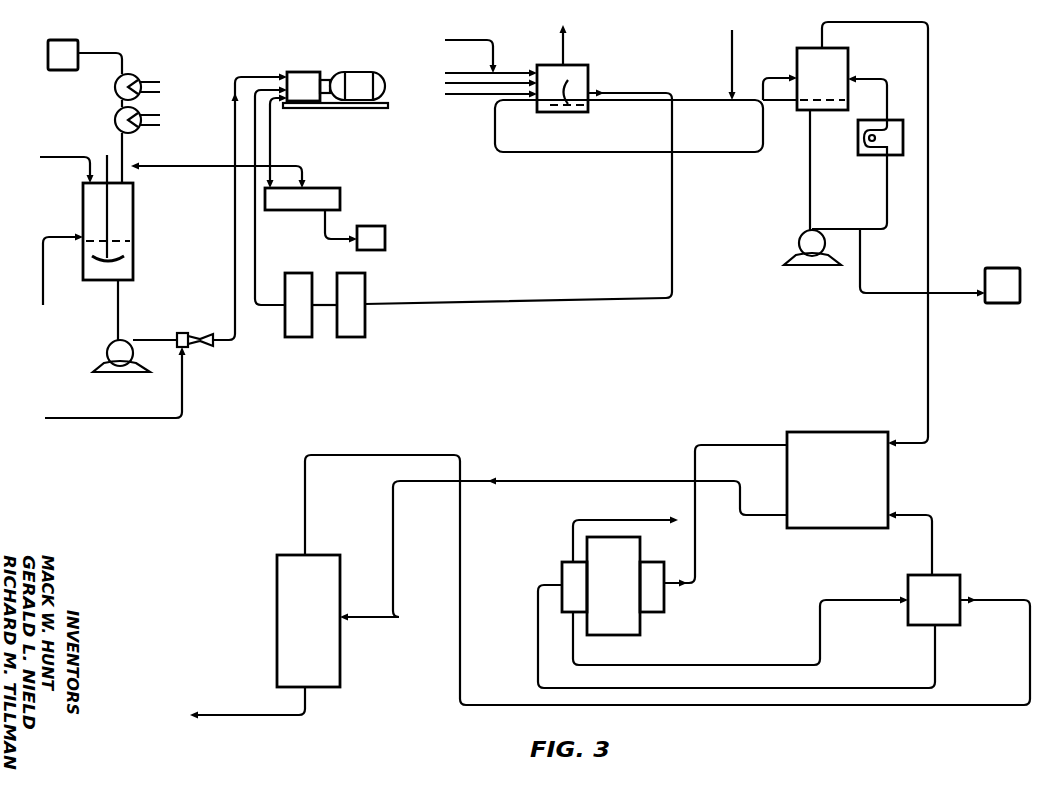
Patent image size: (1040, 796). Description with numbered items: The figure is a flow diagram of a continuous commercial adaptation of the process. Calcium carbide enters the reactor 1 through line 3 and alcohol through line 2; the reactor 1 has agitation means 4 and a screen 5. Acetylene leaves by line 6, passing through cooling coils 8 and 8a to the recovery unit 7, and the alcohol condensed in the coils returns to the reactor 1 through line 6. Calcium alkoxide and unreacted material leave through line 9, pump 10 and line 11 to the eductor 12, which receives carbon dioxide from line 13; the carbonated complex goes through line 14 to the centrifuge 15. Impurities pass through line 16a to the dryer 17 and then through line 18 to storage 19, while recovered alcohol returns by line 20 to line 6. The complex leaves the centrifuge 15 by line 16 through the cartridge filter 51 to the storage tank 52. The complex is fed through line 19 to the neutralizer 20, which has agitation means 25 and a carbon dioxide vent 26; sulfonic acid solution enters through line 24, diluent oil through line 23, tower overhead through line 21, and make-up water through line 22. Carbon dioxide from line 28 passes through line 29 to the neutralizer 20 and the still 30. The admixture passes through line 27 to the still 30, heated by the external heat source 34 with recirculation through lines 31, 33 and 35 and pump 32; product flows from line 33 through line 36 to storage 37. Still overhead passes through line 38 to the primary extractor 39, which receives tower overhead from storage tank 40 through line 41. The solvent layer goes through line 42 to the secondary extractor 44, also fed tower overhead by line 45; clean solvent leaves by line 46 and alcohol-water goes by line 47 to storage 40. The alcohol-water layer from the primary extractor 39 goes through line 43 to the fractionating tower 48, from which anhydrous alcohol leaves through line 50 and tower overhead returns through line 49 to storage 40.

The reactor 1 is at (152, 231).
The line 2 is at (55, 270).
The line 3 is at (67, 160).
The agitation means 4 is at (113, 206).
The screen 5 is at (117, 238).
The line 6 is at (129, 141).
The recovery unit 7 is at (85, 57).
The cooling coil 8 is at (129, 87).
The cooling coil 8a is at (126, 120).
The line 9 is at (125, 310).
The pump 10 is at (116, 356).
The line 11 is at (155, 330).
The eductor (carbonator) 12 is at (195, 330).
The line 13 is at (115, 382).
The line 14 is at (250, 207).
The centrifuge 15 is at (332, 80).
The line 16 is at (269, 196).
The line 16a is at (287, 131).
The dryer 17 is at (301, 210).
The line 18 is at (341, 226).
The storage 19 is at (514, 197).
The line 20 is at (218, 166).
The line 21 is at (491, 65).
The line 22 is at (471, 47).
The line 23 is at (479, 87).
The line 24 is at (491, 103).
The agitation means 25 is at (572, 93).
The carbon dioxide vent 26 is at (574, 45).
The line 27 is at (629, 127).
The line 28 is at (742, 65).
The line 29 is at (742, 88).
The still 30 is at (822, 79).
The line 31 is at (798, 170).
The pump 32 is at (807, 247).
The line 33 is at (849, 192).
The external heat source 34 is at (866, 137).
The line 35 is at (877, 98).
The line 36 is at (922, 263).
The storage 37 is at (1002, 285).
The line 38 is at (885, 234).
The primary extractor 39 is at (837, 480).
The tower overhead storage tank 40 is at (934, 600).
The line 41 is at (910, 534).
The line 42 is at (725, 506).
The line 43 is at (563, 539).
The secondary extractor 44 is at (666, 586).
The line 45 is at (736, 636).
The line 46 is at (609, 532).
The line 47 is at (740, 631).
The fractionating tower 48 is at (308, 621).
The line 49 is at (653, 569).
The line 50 is at (253, 724).
The cartridge filter 51 is at (311, 305).
The storage tank 52 is at (351, 305).